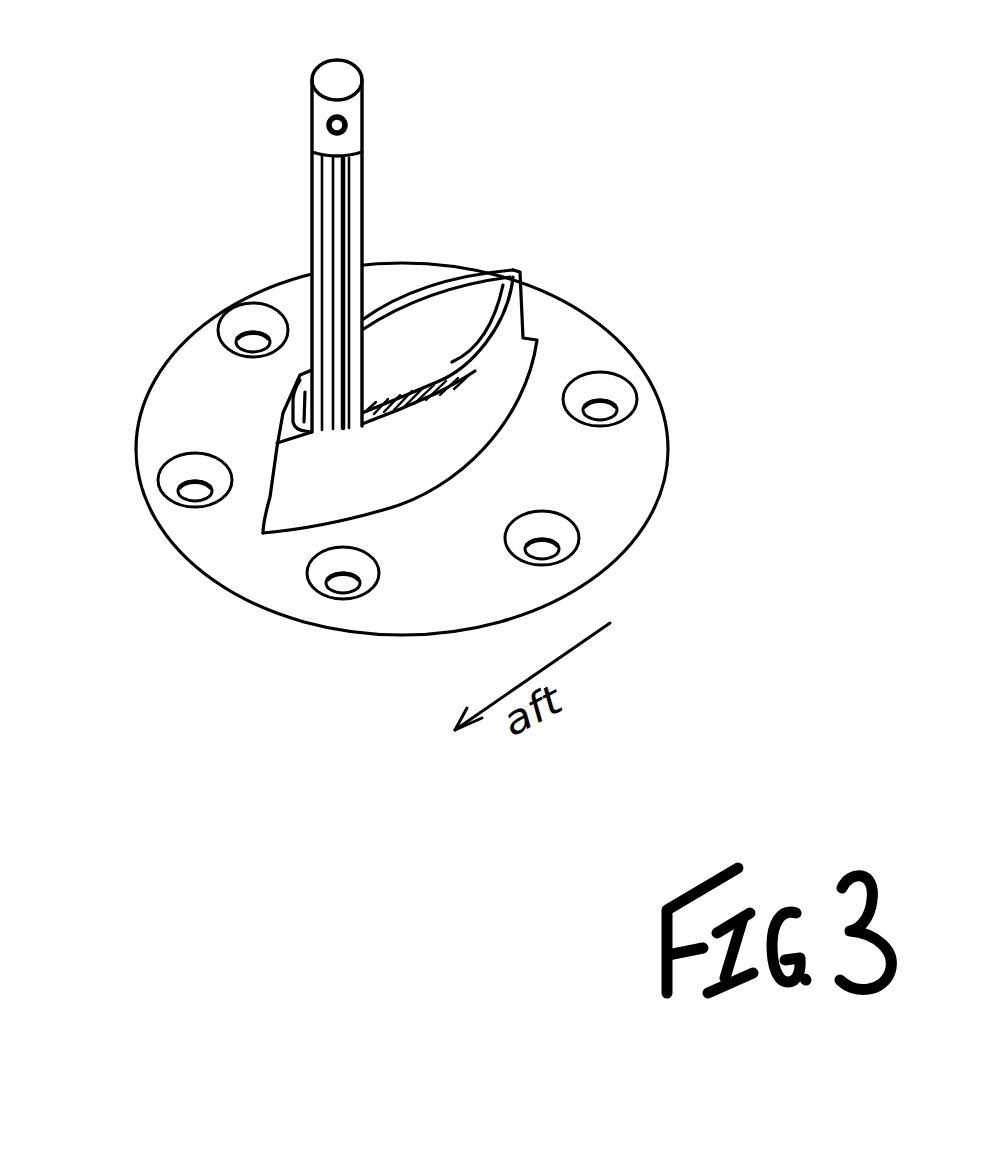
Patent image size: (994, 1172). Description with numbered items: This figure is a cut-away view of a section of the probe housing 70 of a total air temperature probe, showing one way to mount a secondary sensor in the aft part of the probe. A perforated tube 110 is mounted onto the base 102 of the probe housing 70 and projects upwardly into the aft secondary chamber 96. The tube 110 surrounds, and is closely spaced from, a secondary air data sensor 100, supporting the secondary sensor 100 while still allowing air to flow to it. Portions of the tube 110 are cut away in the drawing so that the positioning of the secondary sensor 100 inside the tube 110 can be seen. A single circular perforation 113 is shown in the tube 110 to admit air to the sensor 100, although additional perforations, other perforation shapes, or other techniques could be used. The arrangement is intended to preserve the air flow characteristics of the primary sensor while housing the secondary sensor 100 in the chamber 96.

The secondary sensor 100 is at (310, 200).
The perforated tube 110 is at (365, 225).
The circular perforation 113 is at (345, 122).
The aft secondary chamber 96 is at (290, 398).
The probe housing 70 is at (470, 270).
The base 102 is at (255, 578).